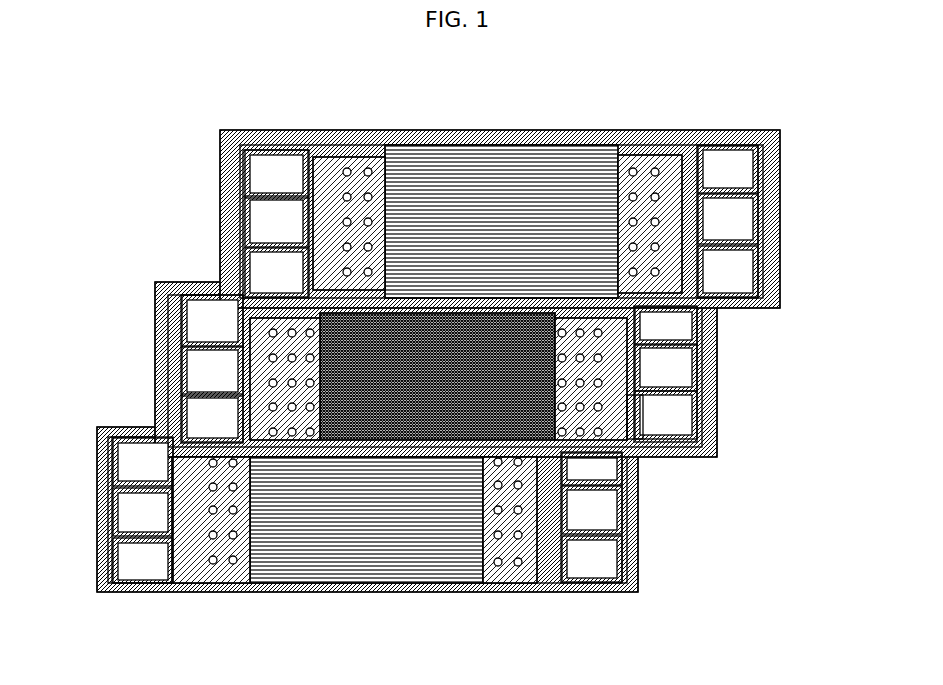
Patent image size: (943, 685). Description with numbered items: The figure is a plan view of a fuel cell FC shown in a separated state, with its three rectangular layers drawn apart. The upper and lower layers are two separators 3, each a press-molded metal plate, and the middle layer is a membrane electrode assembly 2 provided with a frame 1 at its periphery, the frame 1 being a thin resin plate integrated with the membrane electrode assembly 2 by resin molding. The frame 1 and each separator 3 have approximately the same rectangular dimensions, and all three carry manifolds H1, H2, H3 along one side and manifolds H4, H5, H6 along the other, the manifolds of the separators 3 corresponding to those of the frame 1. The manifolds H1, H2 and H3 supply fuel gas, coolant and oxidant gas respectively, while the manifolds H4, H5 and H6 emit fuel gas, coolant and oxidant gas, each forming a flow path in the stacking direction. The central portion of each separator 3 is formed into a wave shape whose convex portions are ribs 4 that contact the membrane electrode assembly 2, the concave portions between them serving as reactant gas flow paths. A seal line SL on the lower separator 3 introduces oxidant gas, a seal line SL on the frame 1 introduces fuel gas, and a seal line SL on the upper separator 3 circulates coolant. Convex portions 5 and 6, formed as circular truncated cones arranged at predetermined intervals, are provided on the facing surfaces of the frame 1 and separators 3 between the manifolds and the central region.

The fuel cell FC is at (677, 124).
The frame 1 is at (623, 323).
The membrane electrode assembly 2 is at (505, 305).
The separator 3 is at (290, 590).
The ribs 4 is at (447, 197).
The convex portion 5 is at (640, 412).
The convex portion 6 is at (655, 166).
The seal line SL is at (288, 143).
The manifold H1 is at (248, 166).
The manifold H2 is at (248, 210).
The manifold H3 is at (248, 262).
The manifold H4 is at (740, 167).
The manifold H5 is at (743, 218).
The manifold H6 is at (745, 268).